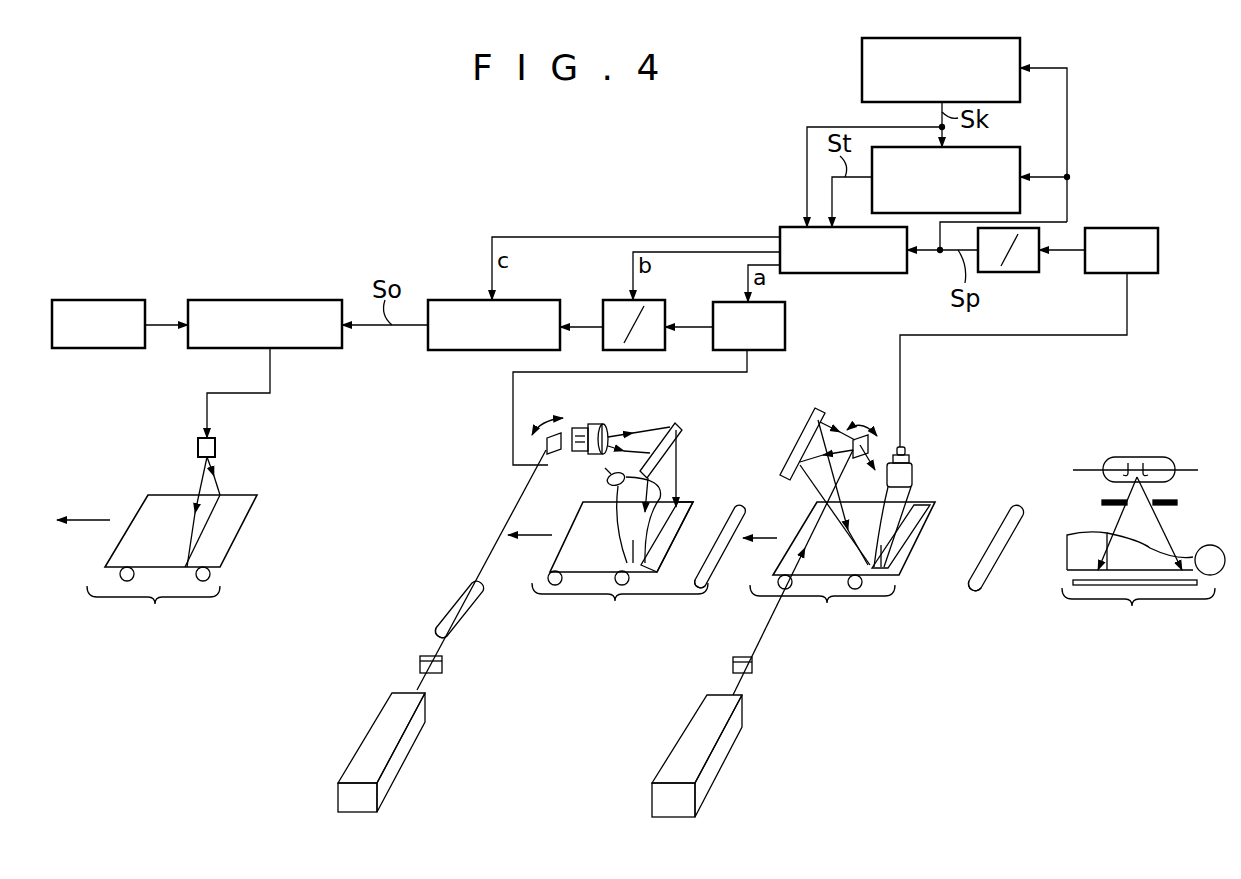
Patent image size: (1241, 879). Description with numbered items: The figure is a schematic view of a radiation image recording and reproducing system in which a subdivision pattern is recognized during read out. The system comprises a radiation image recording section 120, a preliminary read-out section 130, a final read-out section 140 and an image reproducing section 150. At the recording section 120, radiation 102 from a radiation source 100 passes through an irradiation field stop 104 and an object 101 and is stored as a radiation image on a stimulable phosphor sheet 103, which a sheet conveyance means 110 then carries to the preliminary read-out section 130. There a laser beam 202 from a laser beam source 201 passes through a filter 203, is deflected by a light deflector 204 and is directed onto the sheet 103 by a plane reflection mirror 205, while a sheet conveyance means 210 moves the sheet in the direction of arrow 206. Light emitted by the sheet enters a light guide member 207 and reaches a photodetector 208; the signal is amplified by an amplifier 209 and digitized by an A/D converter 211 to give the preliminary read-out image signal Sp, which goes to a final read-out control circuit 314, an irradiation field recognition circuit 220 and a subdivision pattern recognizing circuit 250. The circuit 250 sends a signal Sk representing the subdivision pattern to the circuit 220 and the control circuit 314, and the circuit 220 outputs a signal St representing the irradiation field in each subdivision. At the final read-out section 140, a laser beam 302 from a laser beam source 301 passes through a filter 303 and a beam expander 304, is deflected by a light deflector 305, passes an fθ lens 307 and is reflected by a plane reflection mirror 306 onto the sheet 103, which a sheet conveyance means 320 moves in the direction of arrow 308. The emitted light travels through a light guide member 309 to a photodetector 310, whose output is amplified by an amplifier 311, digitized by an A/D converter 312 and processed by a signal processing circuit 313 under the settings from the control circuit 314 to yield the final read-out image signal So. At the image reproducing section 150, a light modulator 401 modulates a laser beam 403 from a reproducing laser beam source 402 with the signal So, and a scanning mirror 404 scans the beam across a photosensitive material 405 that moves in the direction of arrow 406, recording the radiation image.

The radiation source 100 is at (1147, 455).
The object 101 is at (1138, 543).
The radiation 102 is at (1123, 518).
The stimulable phosphor sheet 103 is at (678, 518).
The irradiation field stop 104 is at (1168, 500).
The sheet conveyance means 110 is at (975, 590).
The radiation image recording section 120 is at (1138, 585).
The preliminary read-out section 130 is at (842, 568).
The final read-out section 140 is at (620, 568).
The image reproducing section 150 is at (153, 598).
The laser beam source 201 is at (718, 760).
The laser beam 202 is at (735, 685).
The filter 203 is at (753, 665).
The light deflector 204 is at (870, 442).
The plane reflection mirror 205 is at (815, 408).
The arrow 206 is at (766, 535).
The light guide member 207 is at (902, 497).
The photodetector 208 is at (912, 458).
The amplifier 209 is at (1118, 228).
The sheet conveyance means 210 is at (862, 588).
The A/D converter 211 is at (1022, 272).
The irradiation field recognition circuit 220 is at (990, 147).
The subdivision pattern recognizing circuit 250 is at (862, 68).
The laser beam source 301 is at (408, 748).
The laser beam 302 is at (427, 680).
The filter 303 is at (443, 662).
The beam expander 304 is at (472, 610).
The light deflector 305 is at (558, 432).
The plane reflection mirror 306 is at (680, 422).
The fθ lens 307 is at (598, 425).
The arrow 308 is at (547, 535).
The light guide member 309 is at (648, 495).
The photodetector 310 is at (607, 478).
The amplifier 311 is at (715, 302).
The A/D converter 312 is at (612, 300).
The signal processing circuit 313 is at (445, 300).
The final read-out control circuit 314 is at (878, 273).
The sheet conveyance means 320 is at (630, 582).
The light modulator 401 is at (300, 300).
The reproducing laser beam source 402 is at (128, 300).
The laser beam 403 is at (160, 327).
The scanning mirror 404 is at (216, 449).
The photosensitive material 405 is at (165, 500).
The arrow 406 is at (100, 520).